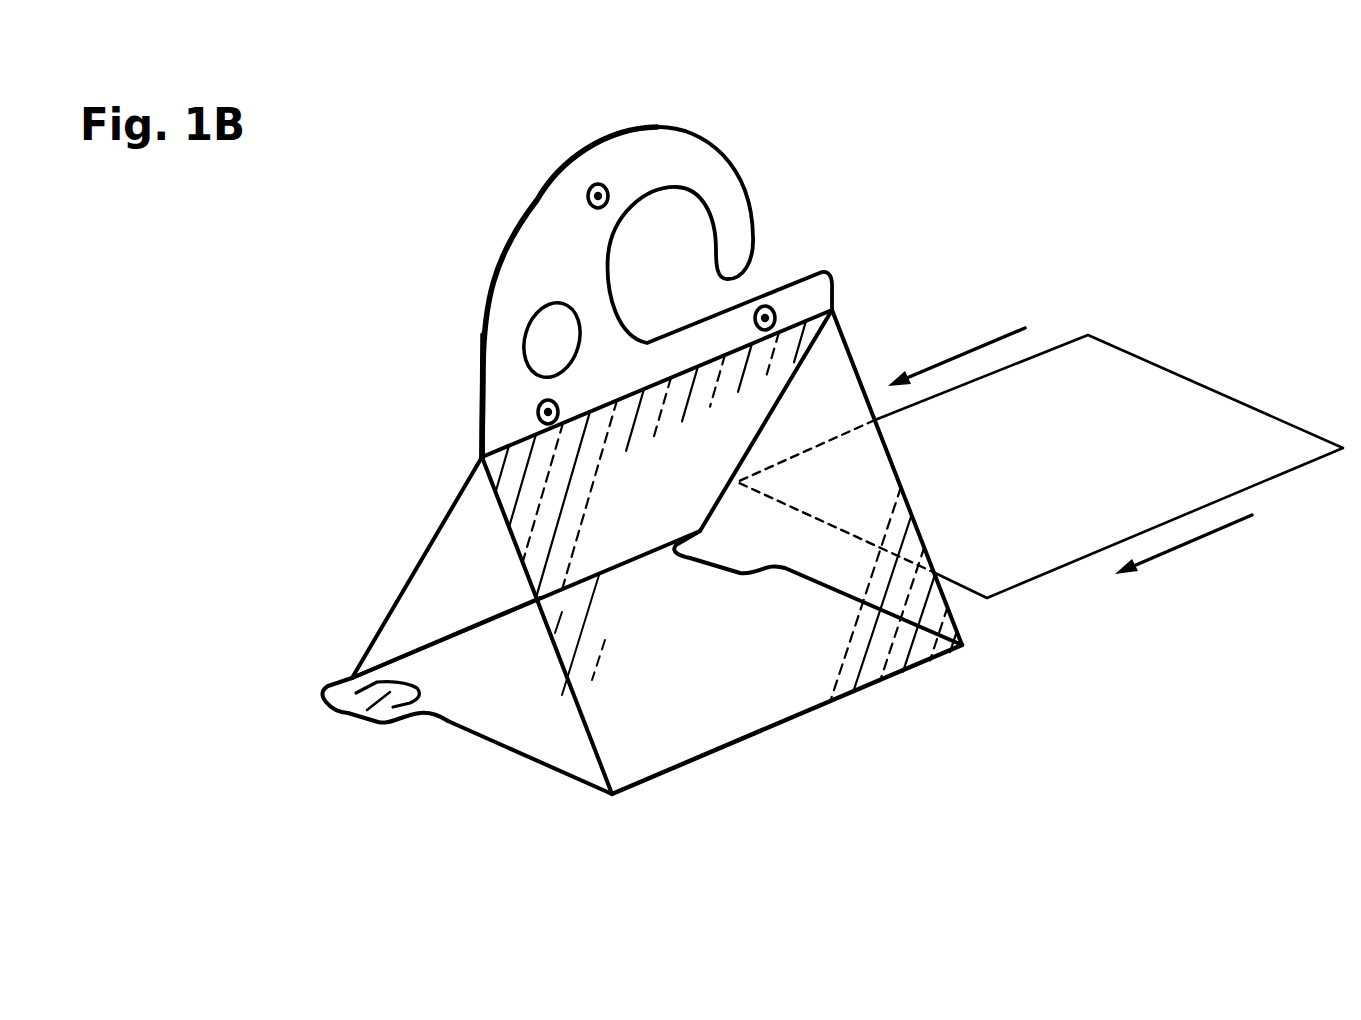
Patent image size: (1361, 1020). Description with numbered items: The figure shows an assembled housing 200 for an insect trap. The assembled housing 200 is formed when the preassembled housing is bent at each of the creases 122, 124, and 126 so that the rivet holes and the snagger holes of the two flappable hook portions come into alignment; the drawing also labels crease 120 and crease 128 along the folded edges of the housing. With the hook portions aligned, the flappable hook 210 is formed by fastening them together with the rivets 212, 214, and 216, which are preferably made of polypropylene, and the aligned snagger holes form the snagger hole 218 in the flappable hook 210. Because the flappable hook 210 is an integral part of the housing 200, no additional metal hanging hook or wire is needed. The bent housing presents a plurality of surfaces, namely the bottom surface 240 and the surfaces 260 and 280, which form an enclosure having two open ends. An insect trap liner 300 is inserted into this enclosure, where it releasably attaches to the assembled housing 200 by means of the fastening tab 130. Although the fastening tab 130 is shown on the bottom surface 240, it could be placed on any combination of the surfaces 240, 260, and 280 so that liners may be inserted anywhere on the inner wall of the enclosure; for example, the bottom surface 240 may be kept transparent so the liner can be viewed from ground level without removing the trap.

The assembled housing 200 is at (301, 399).
The flappable hook 210 is at (697, 248).
The rivet 212 is at (516, 177).
The rivet 214 is at (451, 404).
The rivet 216 is at (868, 270).
The snagger hole 218 is at (451, 329).
The crease 120 is at (794, 352).
The crease 122 is at (358, 398).
The crease 124 is at (725, 766).
The crease 126 is at (322, 638).
The crease 128 is at (519, 641).
The fastening tab 130 is at (343, 730).
The bottom surface 240 is at (643, 710).
The surface 260 is at (717, 698).
The surface 280 is at (341, 567).
The insect trap liner 300 is at (1040, 435).